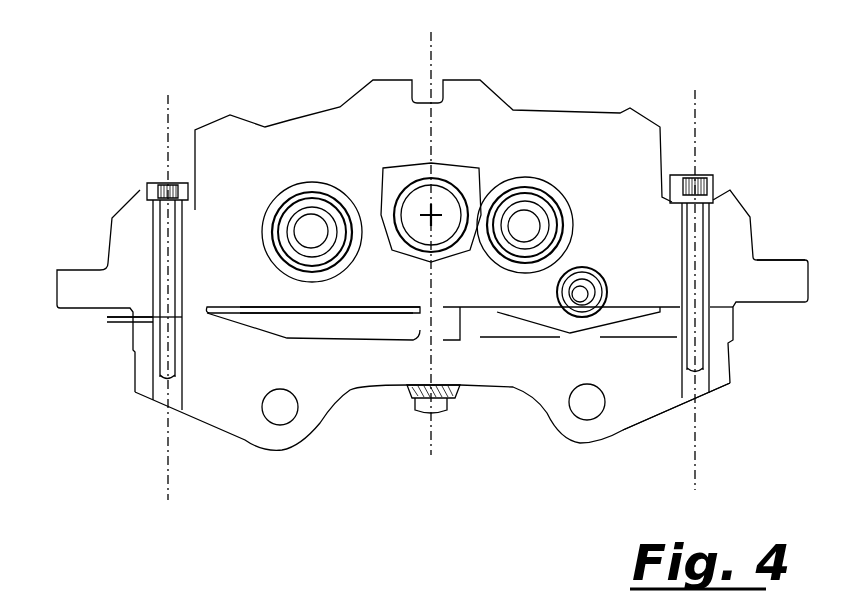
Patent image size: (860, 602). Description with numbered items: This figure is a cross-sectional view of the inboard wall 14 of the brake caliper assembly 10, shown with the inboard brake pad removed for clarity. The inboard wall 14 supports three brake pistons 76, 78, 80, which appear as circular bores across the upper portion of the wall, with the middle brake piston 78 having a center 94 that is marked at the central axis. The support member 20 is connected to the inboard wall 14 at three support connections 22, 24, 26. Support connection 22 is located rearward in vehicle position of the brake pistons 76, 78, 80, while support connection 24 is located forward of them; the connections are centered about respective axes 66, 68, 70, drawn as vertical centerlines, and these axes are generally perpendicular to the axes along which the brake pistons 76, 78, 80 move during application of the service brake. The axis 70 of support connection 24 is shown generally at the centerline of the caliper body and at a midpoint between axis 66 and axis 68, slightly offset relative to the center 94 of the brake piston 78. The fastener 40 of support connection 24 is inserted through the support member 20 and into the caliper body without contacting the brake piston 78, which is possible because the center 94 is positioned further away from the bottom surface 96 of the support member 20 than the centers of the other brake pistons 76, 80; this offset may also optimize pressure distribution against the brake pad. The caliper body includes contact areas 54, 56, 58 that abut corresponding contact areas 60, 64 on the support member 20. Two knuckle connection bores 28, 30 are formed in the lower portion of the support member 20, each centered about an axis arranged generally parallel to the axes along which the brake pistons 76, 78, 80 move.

The brake caliper assembly 10 is at (163, 58).
The inboard wall 14 is at (611, 143).
The support member 20 is at (130, 353).
The support connection 22 is at (146, 183).
The support connection 24 is at (715, 176).
The support connection 26 is at (448, 424).
The knuckle connection bore 28 is at (282, 410).
The knuckle connection bore 30 is at (581, 405).
The fastener 40 is at (418, 400).
The contact area 54 is at (147, 317).
The contact area 56 is at (417, 318).
The contact area 58 is at (720, 307).
The contact area 60 is at (90, 283).
The contact area 64 is at (799, 241).
The axis 66 is at (168, 100).
The axis 68 is at (695, 102).
The axis 70 is at (431, 60).
The brake piston 76 is at (295, 258).
The brake piston 78 is at (393, 247).
The brake piston 80 is at (520, 243).
The center 94 is at (424, 212).
The bottom surface 96 is at (633, 430).